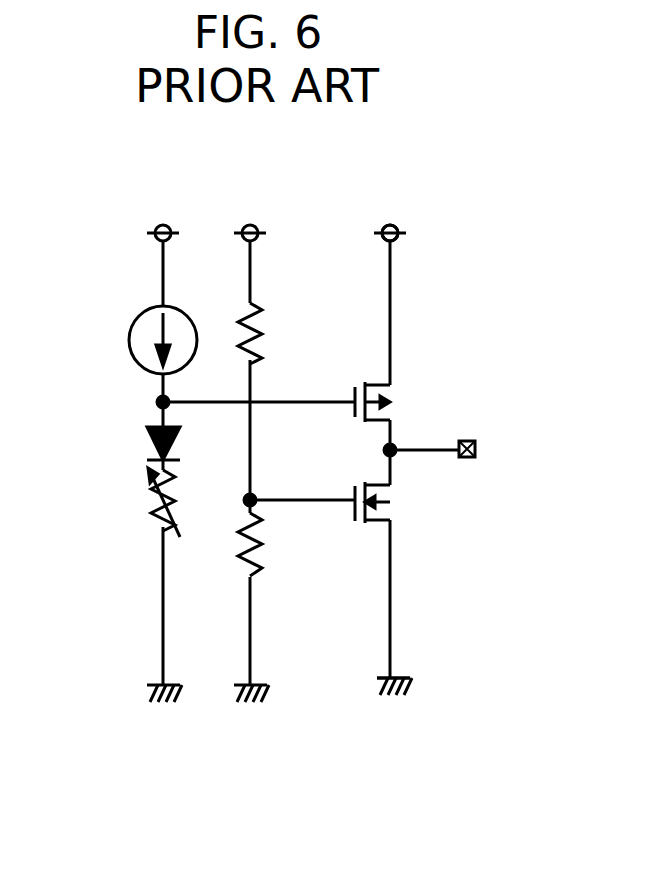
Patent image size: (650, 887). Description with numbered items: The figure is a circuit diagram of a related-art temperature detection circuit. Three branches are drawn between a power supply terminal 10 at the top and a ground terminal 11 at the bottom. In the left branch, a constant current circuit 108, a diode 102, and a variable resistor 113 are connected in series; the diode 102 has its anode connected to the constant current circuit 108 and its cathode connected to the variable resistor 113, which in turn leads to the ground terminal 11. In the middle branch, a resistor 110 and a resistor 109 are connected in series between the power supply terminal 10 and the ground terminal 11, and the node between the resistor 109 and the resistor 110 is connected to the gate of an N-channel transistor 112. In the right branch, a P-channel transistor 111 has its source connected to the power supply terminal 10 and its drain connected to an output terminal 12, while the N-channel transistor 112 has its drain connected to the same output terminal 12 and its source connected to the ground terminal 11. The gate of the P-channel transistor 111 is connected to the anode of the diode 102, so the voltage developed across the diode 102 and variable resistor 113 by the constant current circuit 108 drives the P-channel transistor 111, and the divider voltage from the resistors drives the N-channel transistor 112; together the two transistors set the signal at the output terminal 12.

The power supply terminal 10 is at (389, 216).
The ground terminal 11 is at (391, 698).
The output terminal 12 is at (498, 436).
The diode 102 is at (135, 440).
The constant current circuit 108 is at (128, 320).
The resistor 109 is at (268, 558).
The resistor 110 is at (270, 330).
The P-channel transistor 111 is at (396, 404).
The N-channel transistor 112 is at (398, 503).
The variable resistor 113 is at (142, 500).